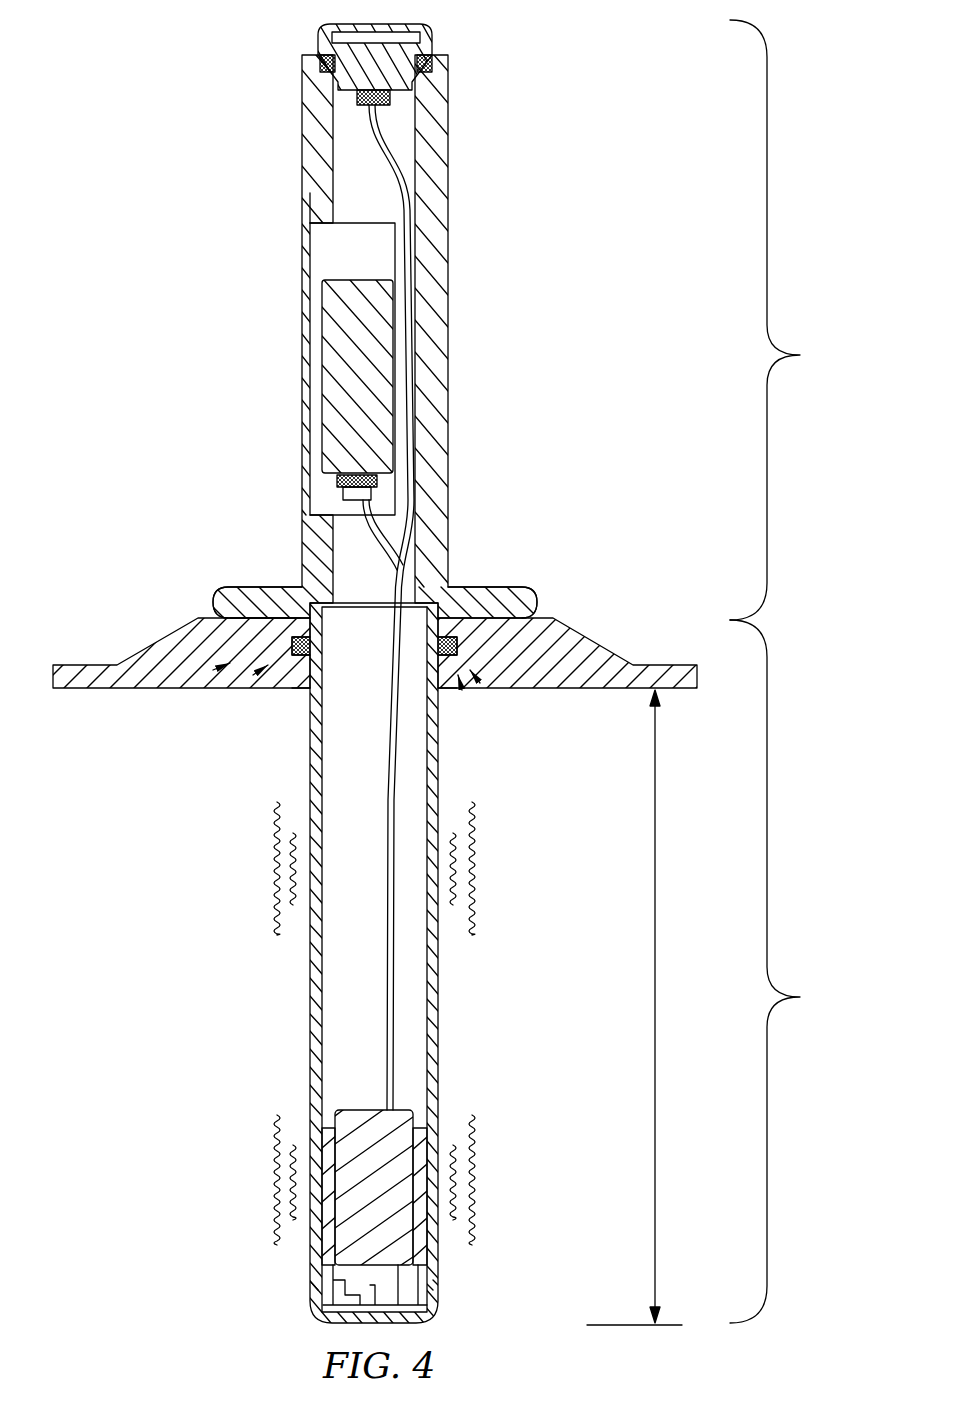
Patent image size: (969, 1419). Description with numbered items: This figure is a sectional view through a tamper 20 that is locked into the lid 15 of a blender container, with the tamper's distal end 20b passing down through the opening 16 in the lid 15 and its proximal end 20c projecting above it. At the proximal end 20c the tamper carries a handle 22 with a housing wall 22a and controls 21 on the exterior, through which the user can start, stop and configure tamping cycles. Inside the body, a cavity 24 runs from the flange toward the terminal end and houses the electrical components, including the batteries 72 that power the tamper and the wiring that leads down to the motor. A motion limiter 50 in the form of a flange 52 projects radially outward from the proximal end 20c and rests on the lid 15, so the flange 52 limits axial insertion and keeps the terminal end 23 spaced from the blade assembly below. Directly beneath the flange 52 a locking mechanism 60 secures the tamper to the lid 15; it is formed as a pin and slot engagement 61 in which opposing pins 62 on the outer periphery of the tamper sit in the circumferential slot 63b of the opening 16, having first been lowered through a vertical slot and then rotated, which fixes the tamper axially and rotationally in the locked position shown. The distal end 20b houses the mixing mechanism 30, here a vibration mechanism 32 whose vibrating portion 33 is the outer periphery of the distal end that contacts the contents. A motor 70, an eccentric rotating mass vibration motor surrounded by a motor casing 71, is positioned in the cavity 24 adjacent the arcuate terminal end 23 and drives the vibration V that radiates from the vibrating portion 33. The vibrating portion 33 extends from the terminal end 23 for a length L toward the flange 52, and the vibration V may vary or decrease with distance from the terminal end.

The tamper 20 is at (118, 272).
The proximal end 20c is at (792, 320).
The distal end 20b is at (793, 971).
The controls 21 is at (385, 24).
The handle 22 is at (390, 336).
The housing wall 22a is at (440, 385).
The cavity 24 is at (410, 130).
The batteries 72 is at (355, 380).
The motion limiter 50 is at (391, 573).
The flange 52 is at (528, 600).
The circumferential slot 63b is at (273, 647).
The lid 15 is at (100, 677).
The opening 16 is at (297, 689).
The pin 62 is at (302, 646).
The locking mechanism 60 is at (253, 618).
The pin and slot engagement 61 is at (270, 665).
The vibrating portion 33 is at (440, 1030).
The motor 70 is at (400, 1160).
The motor casing 71 is at (428, 1233).
The terminal end 23 is at (340, 1315).
The vibration V is at (474, 870).
The mixing mechanism 30 is at (198, 1126).
The vibration mechanism 32 is at (236, 1182).
The length L is at (643, 1007).